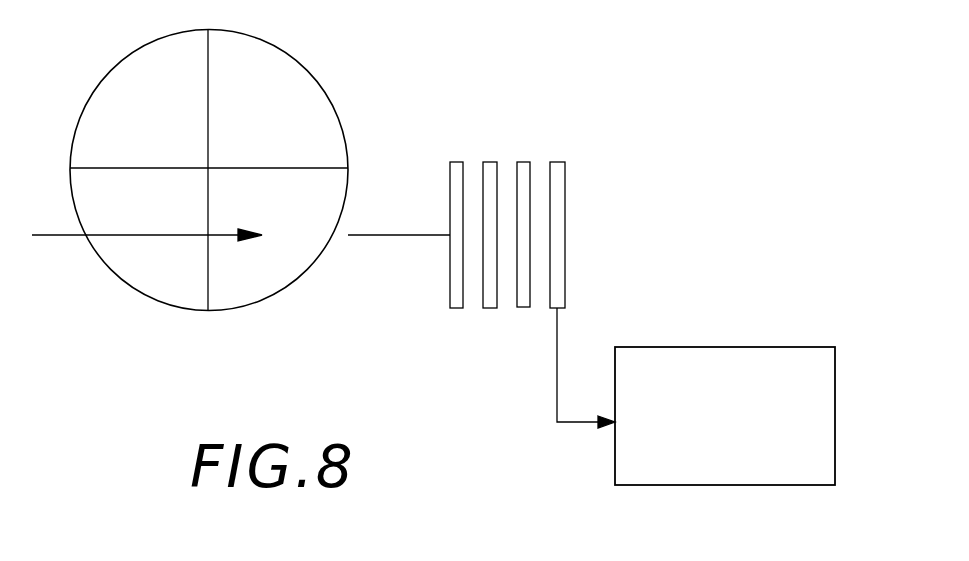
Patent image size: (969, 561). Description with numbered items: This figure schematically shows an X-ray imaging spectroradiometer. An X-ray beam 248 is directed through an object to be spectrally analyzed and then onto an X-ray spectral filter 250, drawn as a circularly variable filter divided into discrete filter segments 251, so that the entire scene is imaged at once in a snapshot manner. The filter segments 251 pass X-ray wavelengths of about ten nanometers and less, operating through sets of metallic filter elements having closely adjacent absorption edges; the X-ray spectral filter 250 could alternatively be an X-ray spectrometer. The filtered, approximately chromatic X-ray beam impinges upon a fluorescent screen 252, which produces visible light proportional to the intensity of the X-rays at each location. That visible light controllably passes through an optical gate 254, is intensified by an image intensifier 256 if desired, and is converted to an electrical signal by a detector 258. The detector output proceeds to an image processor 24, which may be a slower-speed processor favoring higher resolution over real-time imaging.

The image processor 24 is at (793, 347).
The X-ray beam 248 is at (65, 237).
The X-ray spectral filter 250 is at (297, 72).
The filter segments 251 is at (142, 65).
The fluorescent screen 252 is at (458, 162).
The optical gate 254 is at (488, 308).
The image intensifier 256 is at (523, 162).
The detector 258 is at (565, 290).